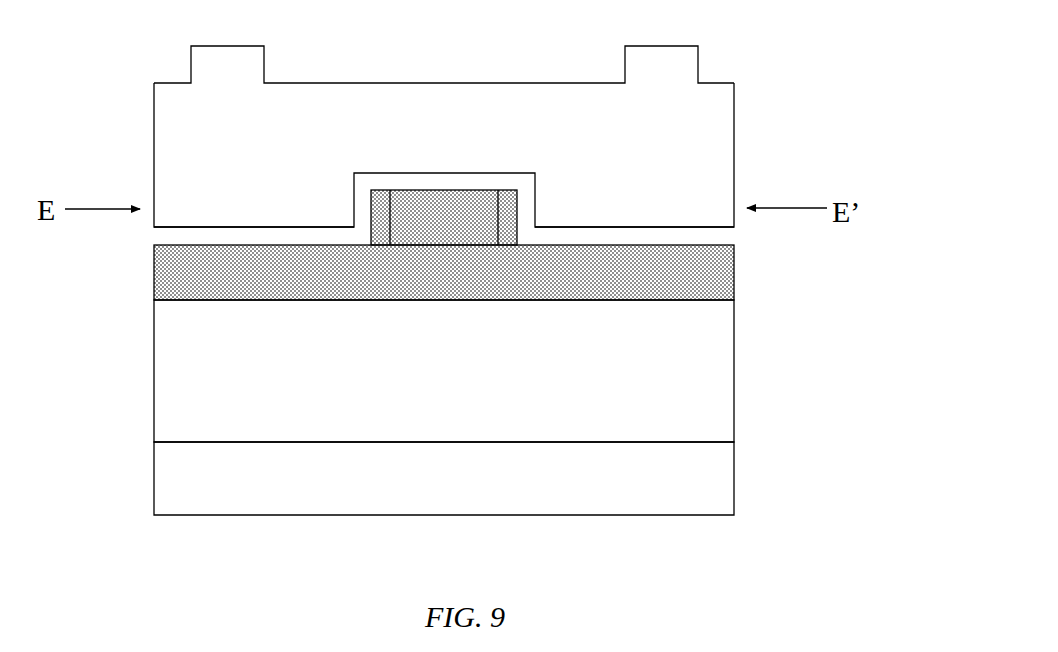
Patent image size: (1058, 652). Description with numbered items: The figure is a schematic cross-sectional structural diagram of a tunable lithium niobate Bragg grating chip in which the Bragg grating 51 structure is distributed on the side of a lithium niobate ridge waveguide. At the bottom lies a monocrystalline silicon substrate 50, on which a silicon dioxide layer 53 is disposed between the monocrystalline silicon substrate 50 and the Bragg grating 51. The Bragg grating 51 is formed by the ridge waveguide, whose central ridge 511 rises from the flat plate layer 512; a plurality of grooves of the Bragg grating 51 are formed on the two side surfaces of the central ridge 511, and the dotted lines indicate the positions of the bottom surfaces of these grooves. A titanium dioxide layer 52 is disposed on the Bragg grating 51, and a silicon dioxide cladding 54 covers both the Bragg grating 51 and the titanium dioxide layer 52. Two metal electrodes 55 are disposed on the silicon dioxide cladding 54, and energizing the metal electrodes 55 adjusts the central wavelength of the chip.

The monocrystalline silicon substrate 50 is at (210, 479).
The silicon dioxide layer 53 is at (210, 370).
The Bragg grating 51 is at (550, 184).
The central ridge 511 is at (469, 220).
The flat plate layer 512 is at (590, 262).
The silicon dioxide cladding 54 is at (180, 191).
The titanium dioxide layer 52 is at (365, 179).
The metal electrode 55 is at (210, 72).